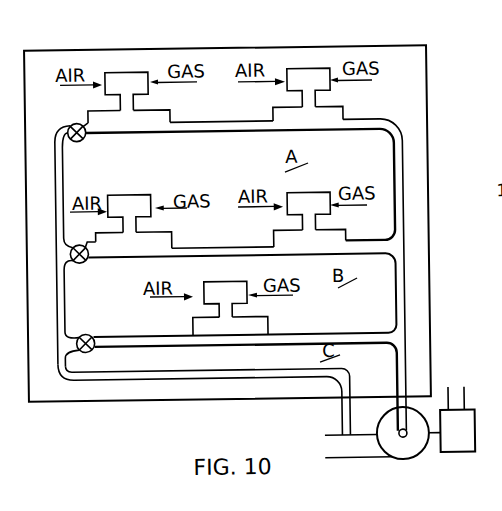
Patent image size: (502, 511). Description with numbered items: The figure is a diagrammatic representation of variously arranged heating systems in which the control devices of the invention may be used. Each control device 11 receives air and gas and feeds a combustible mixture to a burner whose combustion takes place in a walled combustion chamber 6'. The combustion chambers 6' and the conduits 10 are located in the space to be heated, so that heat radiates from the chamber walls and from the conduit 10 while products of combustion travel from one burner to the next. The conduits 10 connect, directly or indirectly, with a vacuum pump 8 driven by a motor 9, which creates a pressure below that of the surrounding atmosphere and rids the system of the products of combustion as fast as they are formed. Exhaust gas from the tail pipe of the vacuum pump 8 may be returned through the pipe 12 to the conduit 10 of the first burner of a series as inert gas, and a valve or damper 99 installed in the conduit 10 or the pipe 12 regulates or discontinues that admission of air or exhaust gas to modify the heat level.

The conduit 10 is at (69, 138).
The valve or damper 99 is at (73, 126).
The control device 11 is at (132, 77).
The combustion chamber 6' is at (199, 212).
The pipe 12 is at (198, 370).
The vacuum pump 8 is at (405, 450).
The motor 9 is at (460, 435).